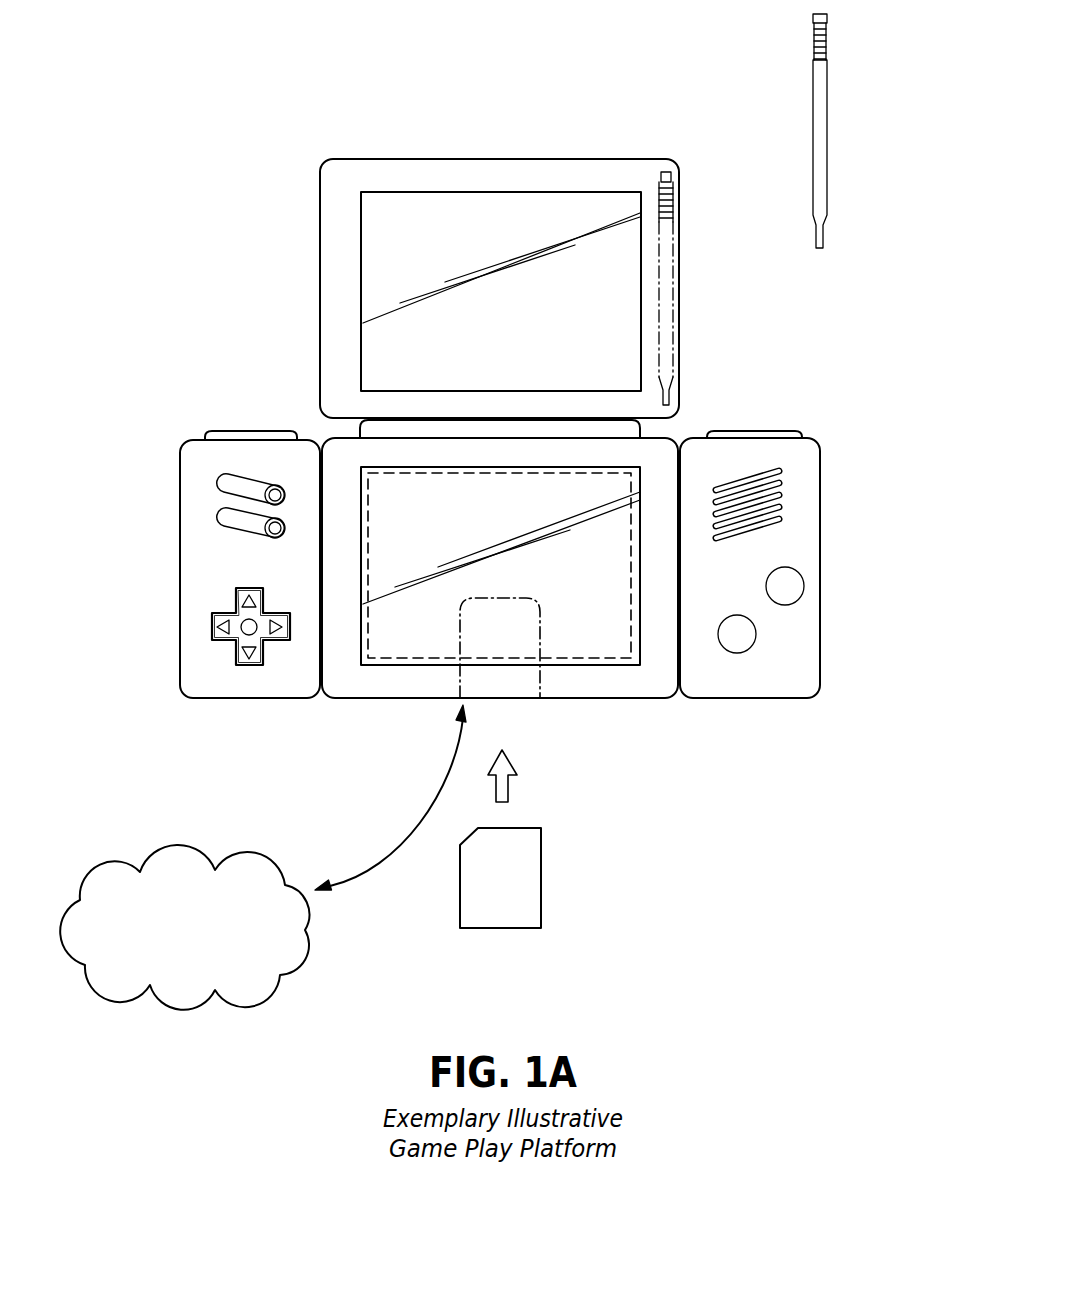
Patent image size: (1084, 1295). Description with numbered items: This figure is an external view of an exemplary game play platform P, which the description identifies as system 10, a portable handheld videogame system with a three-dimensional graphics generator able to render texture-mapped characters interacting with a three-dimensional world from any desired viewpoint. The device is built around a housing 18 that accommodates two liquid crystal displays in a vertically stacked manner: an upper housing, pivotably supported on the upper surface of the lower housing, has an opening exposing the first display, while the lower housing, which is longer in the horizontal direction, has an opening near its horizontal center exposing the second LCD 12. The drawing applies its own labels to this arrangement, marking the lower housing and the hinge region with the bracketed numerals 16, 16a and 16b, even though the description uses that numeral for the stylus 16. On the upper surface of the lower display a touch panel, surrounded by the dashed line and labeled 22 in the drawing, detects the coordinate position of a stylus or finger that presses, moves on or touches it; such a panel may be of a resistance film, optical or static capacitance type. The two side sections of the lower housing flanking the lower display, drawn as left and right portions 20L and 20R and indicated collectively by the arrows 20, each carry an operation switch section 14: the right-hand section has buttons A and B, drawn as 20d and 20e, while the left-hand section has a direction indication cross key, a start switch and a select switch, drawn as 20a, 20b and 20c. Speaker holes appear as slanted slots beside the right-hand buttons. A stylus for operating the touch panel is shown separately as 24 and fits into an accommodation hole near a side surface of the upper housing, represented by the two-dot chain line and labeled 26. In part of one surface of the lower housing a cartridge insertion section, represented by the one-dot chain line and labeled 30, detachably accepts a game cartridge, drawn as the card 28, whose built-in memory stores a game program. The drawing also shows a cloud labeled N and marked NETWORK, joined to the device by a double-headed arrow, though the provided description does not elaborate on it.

The game play platform P is at (288, 142).
The system 10 is at (413, 34).
The second LCD 12 is at (382, 254).
The operation switch section 14 is at (613, 665).
The stylus 16 is at (581, 506).
The housing portion 16a is at (680, 345).
The hinge portion 16b is at (667, 437).
The housing 18 is at (783, 495).
The controllers 20 is at (482, 566).
The left controller 20L is at (254, 432).
The right controller 20R is at (770, 431).
The cross switch (d-pad) 20a is at (212, 627).
The select button 20b is at (222, 487).
The start button 20c is at (268, 527).
The A button 20d is at (803, 580).
The B button 20e is at (757, 633).
The touch panel 22 is at (388, 627).
The stylus 24 is at (827, 123).
The stylus holder 26 is at (665, 238).
The memory card 28 is at (538, 867).
The card slot 30 is at (508, 705).
The network N is at (182, 997).